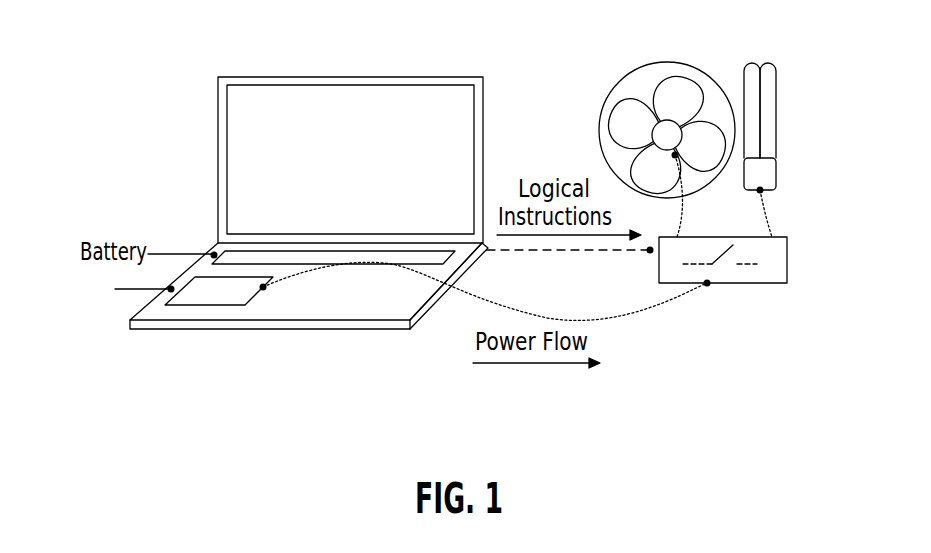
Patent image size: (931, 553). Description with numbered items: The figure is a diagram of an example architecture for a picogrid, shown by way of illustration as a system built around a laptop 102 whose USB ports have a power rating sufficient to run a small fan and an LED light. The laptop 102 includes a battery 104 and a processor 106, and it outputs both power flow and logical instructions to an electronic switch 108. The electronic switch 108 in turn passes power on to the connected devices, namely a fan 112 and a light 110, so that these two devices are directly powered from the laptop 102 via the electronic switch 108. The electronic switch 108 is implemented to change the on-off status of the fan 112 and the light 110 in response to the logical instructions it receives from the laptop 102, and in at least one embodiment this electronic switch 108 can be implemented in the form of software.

The laptop 102 is at (437, 77).
The battery 104 is at (478, 258).
The processor 106 is at (210, 306).
The electronic switch 108 is at (762, 283).
The light 110 is at (777, 87).
The fan 112 is at (612, 96).